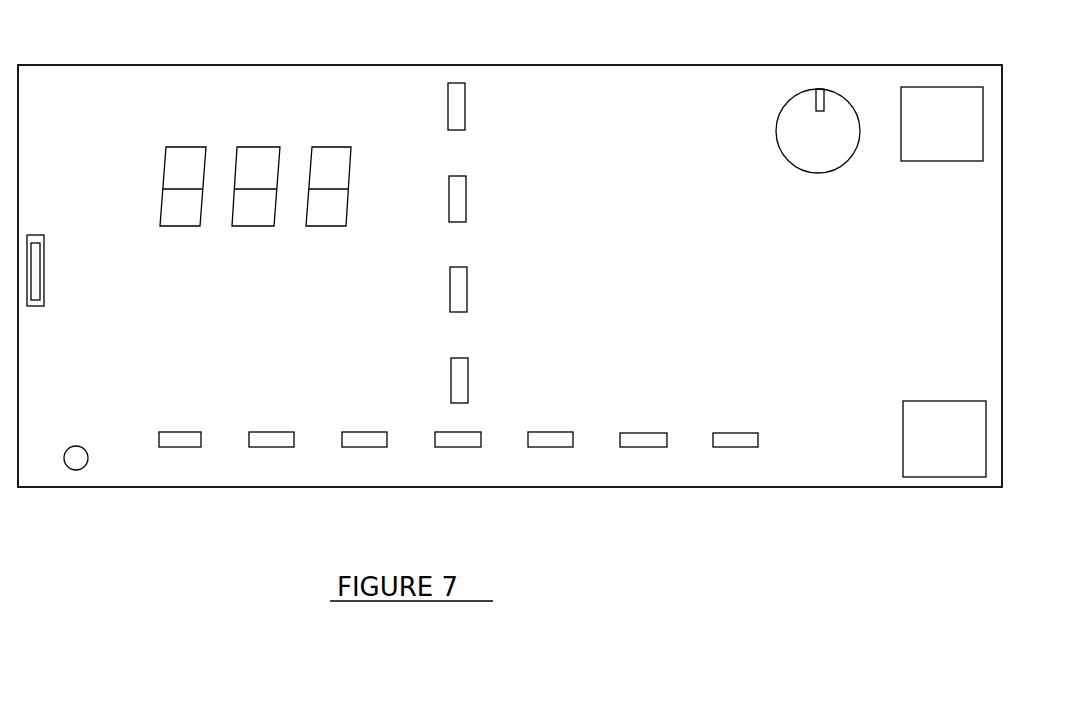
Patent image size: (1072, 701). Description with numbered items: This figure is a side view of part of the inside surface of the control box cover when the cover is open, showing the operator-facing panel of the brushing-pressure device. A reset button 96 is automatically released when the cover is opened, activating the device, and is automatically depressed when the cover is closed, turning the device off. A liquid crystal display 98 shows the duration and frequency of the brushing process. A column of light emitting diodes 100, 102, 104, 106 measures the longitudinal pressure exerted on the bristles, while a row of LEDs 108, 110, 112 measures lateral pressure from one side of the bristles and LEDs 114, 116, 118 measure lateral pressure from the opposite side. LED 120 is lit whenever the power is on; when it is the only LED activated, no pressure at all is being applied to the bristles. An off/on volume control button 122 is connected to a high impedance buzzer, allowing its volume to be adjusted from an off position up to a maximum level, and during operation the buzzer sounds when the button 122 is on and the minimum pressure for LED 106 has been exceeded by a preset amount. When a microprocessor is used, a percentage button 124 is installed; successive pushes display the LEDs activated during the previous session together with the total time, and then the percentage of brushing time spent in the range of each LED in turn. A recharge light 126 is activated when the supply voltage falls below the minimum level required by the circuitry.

The reset button 96 is at (985, 437).
The liquid crystal display 98 is at (161, 206).
The light emitting diode 100 is at (468, 364).
The light emitting diode 102 is at (467, 273).
The light emitting diode 104 is at (466, 183).
The light emitting diode 106 is at (465, 89).
The light emitting diode 108 is at (362, 447).
The light emitting diode 110 is at (268, 447).
The light emitting diode 112 is at (174, 447).
The light emitting diode 114 is at (548, 447).
The light emitting diode 116 is at (643, 447).
The light emitting diode 118 is at (734, 447).
The light emitting diode 120 is at (455, 447).
The off/on volume control button 122 is at (778, 150).
The percentage button 124 is at (983, 118).
The recharge light 126 is at (78, 470).